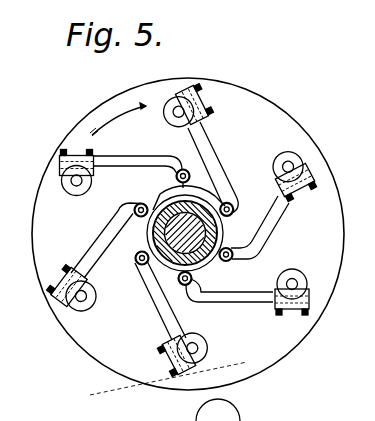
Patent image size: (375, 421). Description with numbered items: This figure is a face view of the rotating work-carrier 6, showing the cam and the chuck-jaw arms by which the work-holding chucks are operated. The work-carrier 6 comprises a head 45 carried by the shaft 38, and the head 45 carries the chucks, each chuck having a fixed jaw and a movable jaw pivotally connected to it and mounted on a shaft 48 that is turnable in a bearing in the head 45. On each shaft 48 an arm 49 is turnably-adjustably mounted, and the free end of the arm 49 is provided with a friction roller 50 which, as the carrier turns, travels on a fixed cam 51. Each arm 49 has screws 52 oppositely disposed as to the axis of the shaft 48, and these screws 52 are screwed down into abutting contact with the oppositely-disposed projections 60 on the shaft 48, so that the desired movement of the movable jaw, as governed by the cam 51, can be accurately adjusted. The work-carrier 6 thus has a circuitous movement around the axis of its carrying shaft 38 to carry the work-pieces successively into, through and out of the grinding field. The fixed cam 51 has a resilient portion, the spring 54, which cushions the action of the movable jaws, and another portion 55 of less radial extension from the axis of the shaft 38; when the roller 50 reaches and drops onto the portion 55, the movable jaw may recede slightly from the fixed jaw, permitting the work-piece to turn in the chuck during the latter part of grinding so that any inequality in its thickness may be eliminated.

The work-carrier 6 is at (188, 234).
The shaft 38 is at (202, 260).
The head 45 is at (106, 240).
The shaft 48 is at (177, 114).
The arm 49 is at (223, 161).
The friction roller 50 is at (236, 210).
The fixed cam 51 is at (207, 197).
The screws 52 is at (200, 91).
The spring 54 is at (168, 193).
The portion 55 is at (195, 193).
The projections 60 is at (175, 99).